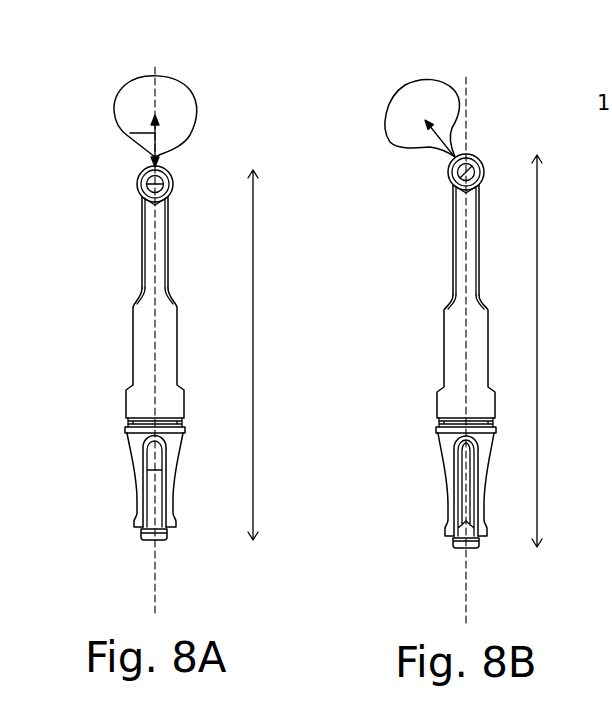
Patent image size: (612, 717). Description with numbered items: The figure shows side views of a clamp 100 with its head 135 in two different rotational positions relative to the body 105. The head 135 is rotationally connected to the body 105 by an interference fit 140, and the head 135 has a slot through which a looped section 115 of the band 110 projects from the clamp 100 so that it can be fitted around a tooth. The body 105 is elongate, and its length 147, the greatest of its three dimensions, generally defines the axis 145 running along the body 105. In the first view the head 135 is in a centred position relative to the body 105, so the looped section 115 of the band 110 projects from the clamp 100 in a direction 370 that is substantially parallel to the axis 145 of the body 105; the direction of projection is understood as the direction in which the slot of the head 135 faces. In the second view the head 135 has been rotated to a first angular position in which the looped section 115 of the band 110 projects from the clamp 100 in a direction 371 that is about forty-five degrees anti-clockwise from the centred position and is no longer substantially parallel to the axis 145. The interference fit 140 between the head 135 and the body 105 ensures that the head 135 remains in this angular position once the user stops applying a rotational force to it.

In FIG. 8A, the clamp 100 is at (98, 68).
In FIG. 8B, the clamp 100 is at (368, 73).
In FIG. 8A, the body 105 is at (150, 264).
In FIG. 8B, the body 105 is at (463, 280).
In FIG. 8A, the band 110 is at (159, 160).
In FIG. 8A, the looped section 115 is at (187, 92).
In FIG. 8B, the looped section 115 is at (425, 80).
In FIG. 8A, the head 135 is at (138, 177).
In FIG. 8B, the head 135 is at (447, 172).
In FIG. 8A, the interference fit 140 is at (140, 190).
In FIG. 8B, the interference fit 140 is at (452, 181).
In FIG. 8A, the axis 145 is at (155, 562).
In FIG. 8B, the axis 145 is at (466, 570).
In FIG. 8A, the length 147 is at (253, 402).
In FIG. 8B, the length 147 is at (537, 351).
In FIG. 8A, the direction 370 is at (128, 135).
In FIG. 8B, the direction 371 is at (447, 128).